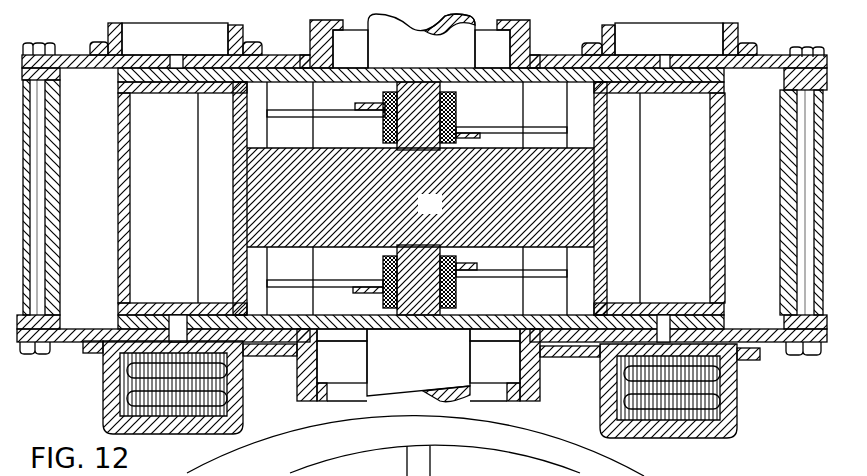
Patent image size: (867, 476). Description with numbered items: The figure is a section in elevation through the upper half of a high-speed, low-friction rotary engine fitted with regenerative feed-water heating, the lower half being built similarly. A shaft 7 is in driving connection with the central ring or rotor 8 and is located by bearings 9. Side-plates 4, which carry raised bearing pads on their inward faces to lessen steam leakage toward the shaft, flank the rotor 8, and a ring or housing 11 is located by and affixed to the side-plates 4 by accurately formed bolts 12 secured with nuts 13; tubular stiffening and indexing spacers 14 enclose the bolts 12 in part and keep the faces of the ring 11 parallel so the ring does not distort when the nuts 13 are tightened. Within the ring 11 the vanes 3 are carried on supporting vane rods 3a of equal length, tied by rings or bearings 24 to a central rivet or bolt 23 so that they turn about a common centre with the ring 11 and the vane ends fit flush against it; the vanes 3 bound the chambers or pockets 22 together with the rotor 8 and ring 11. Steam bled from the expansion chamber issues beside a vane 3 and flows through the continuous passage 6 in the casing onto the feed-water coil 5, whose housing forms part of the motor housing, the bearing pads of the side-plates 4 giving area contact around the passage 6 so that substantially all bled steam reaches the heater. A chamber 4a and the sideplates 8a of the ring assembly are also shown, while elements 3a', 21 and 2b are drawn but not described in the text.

The vane 3 is at (415, 446).
The vane rod 3a is at (417, 280).
The valve rod extension 3a' is at (417, 125).
The side-plate 4 is at (527, 38).
The chamber 4a is at (240, 413).
The coil 5 is at (127, 394).
The passage 6 is at (186, 314).
The shaft 7 is at (418, 365).
The rotor 8 is at (743, 92).
The sideplate 8a is at (290, 316).
The bearing 9 is at (418, 206).
The ring 11 is at (60, 237).
The bolt 12 is at (35, 278).
The nut 13 is at (43, 354).
The spacer 14 is at (28, 143).
The valve chamber 21 is at (287, 97).
The chamber 22 is at (418, 172).
The rivet 23 is at (448, 118).
The ring 24 is at (383, 140).
The member 2b is at (167, 459).